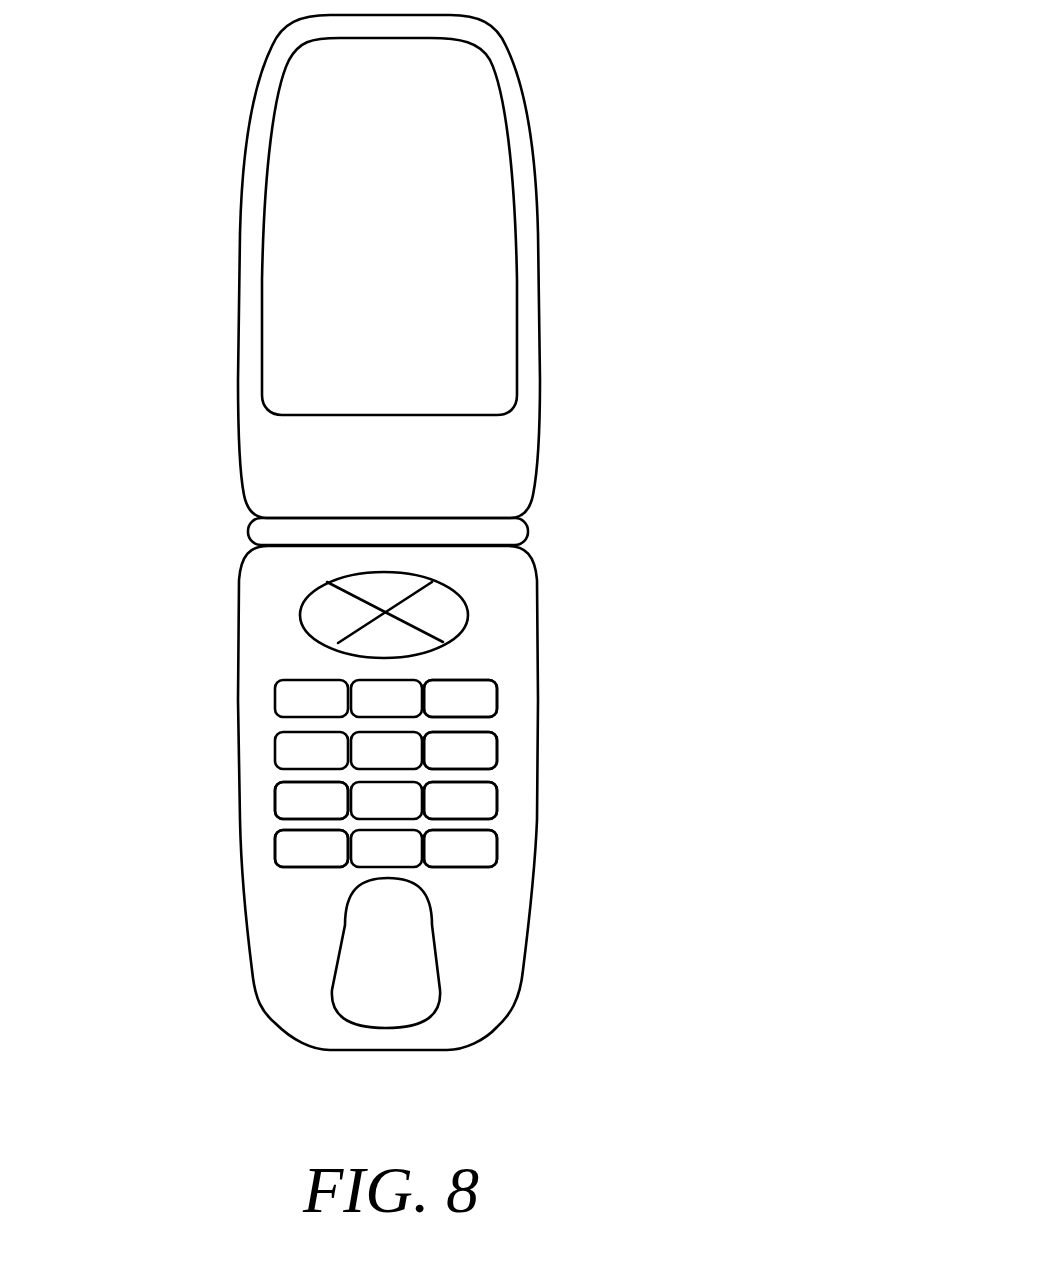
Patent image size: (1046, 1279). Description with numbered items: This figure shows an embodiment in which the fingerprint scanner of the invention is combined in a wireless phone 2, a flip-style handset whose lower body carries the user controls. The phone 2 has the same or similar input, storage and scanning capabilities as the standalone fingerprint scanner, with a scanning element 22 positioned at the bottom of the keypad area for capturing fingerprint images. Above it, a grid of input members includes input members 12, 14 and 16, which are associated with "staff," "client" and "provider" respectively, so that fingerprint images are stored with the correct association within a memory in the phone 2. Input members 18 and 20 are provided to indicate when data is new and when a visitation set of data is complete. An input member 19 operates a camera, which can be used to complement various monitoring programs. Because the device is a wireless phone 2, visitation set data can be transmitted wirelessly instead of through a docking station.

The wireless phone 2 is at (699, 72).
The input member 19 is at (467, 703).
The input member 12 is at (472, 748).
The input member 14 is at (467, 805).
The input member 16 is at (465, 850).
The input member 20 is at (303, 805).
The input member 18 is at (303, 848).
The scanning element 22 is at (375, 965).